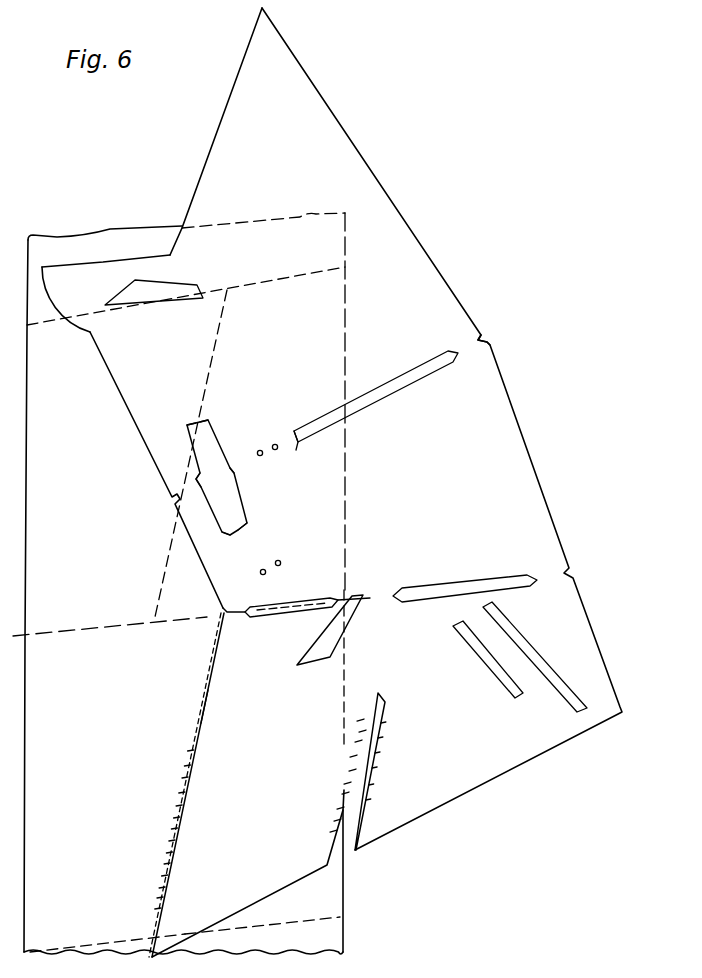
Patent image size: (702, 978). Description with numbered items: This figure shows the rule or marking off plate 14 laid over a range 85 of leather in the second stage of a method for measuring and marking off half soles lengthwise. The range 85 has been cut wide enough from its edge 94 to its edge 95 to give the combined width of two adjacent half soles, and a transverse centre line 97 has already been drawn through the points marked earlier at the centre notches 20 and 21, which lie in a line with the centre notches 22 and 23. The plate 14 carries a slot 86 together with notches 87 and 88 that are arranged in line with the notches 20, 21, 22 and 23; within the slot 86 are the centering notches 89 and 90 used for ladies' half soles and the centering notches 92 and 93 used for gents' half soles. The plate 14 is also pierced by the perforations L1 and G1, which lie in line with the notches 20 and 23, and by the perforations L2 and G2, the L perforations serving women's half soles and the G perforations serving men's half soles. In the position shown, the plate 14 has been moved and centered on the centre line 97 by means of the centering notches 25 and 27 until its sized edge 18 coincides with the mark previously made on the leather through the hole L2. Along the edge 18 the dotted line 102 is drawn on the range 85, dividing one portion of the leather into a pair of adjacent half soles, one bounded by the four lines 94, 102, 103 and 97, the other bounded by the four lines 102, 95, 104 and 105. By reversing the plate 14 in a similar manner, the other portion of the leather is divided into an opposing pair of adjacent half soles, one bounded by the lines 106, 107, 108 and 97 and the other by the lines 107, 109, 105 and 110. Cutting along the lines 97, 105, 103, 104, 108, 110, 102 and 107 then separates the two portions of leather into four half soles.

The rule or marking off plate 14 is at (396, 429).
The range 85 is at (105, 246).
The line 106 is at (27, 418).
The edge 94 is at (24, 778).
The line 108 is at (106, 316).
The line 110 is at (300, 278).
The line 107 is at (213, 364).
The line 109 is at (345, 352).
The centre notch 20 is at (173, 499).
The slot 86 is at (231, 508).
The centering notch 90 is at (183, 411).
The centering notch 93 is at (203, 420).
The notch 88 is at (232, 468).
The notch 87 is at (200, 492).
The centering notch 92 is at (241, 532).
The centering notch 89 is at (233, 538).
The perforation L1 is at (250, 448).
The perforation G1 is at (282, 435).
The perforation L2 is at (256, 565).
The perforation G2 is at (288, 555).
The centre notch 22 is at (456, 358).
The centre notch 21 is at (294, 444).
The centre notch 23 is at (487, 336).
The transverse centre line 97 is at (114, 621).
The centering notch 25 is at (221, 617).
The line 105 is at (294, 612).
The centering notch 27 is at (341, 597).
The edge 95 is at (343, 683).
The edge 18 is at (205, 704).
The dotted line 102 is at (201, 720).
The line 103 is at (72, 944).
The line 104 is at (313, 918).